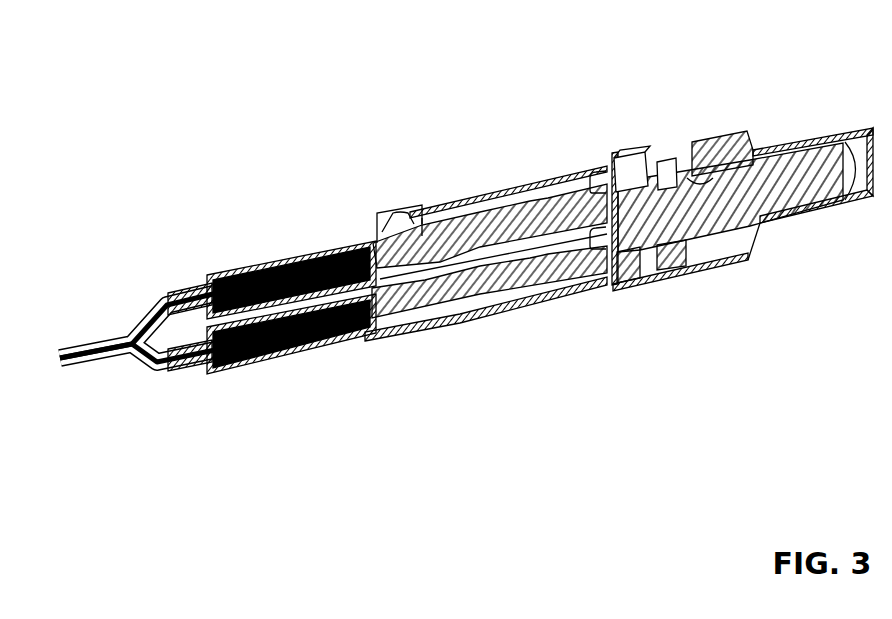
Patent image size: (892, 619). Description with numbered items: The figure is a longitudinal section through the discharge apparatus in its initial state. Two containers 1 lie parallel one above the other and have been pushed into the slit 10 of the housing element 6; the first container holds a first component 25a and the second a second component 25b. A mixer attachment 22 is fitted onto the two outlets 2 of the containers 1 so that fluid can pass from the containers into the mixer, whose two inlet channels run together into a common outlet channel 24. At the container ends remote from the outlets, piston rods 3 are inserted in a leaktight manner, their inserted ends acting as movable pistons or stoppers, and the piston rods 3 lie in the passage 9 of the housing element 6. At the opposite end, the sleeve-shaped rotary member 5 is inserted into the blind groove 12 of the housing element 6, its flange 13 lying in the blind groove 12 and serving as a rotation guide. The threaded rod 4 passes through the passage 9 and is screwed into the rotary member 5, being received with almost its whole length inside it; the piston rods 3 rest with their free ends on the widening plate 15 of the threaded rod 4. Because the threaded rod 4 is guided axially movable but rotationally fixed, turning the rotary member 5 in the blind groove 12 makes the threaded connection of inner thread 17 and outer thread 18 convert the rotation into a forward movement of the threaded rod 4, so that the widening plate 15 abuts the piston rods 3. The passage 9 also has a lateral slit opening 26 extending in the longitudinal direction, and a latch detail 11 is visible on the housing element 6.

The container 1 is at (212, 280).
The outlet 2 is at (182, 292).
The piston rod 3 is at (513, 220).
The threaded rod 4 is at (640, 205).
The rotary member 5 is at (747, 133).
The housing element 6 is at (460, 318).
The passage 9 is at (570, 288).
The slit 10 is at (377, 206).
The latch hook 11 is at (415, 215).
The blind groove 12 is at (674, 264).
The flange 13 is at (678, 254).
The widening plate 15 is at (617, 163).
The inner thread 17 is at (730, 165).
The outer thread 18 is at (683, 182).
The mixer attachment 22 is at (117, 313).
The common outlet channel 24 is at (93, 363).
The first component 25a is at (297, 262).
The second component 25b is at (323, 336).
The lateral slit opening 26 is at (460, 213).